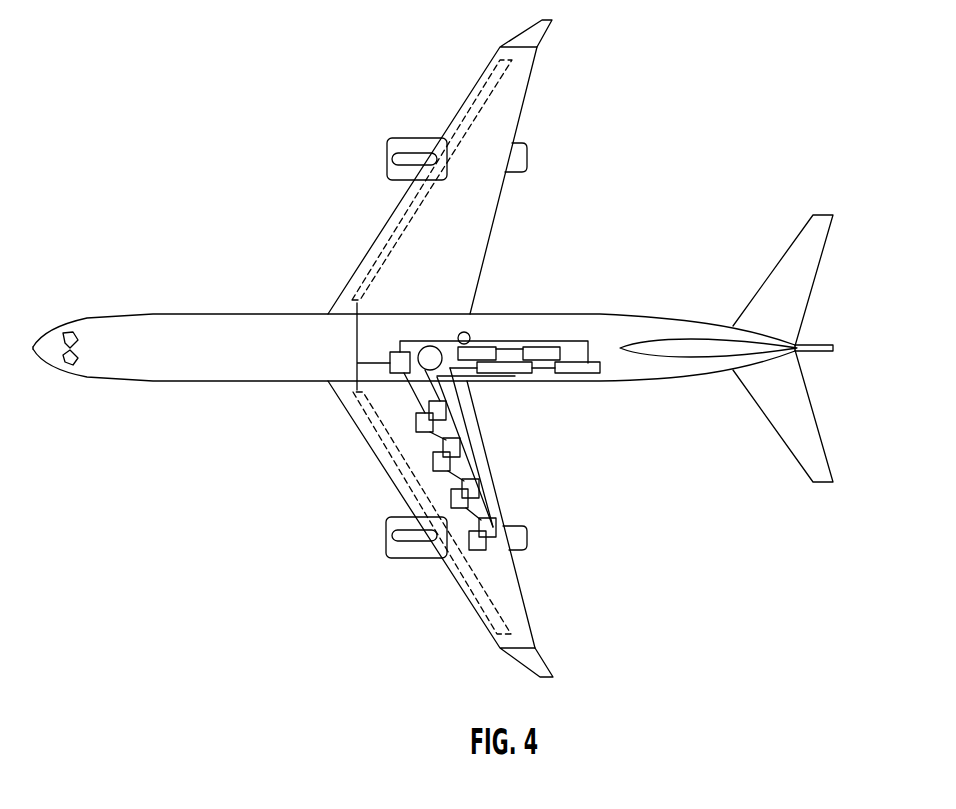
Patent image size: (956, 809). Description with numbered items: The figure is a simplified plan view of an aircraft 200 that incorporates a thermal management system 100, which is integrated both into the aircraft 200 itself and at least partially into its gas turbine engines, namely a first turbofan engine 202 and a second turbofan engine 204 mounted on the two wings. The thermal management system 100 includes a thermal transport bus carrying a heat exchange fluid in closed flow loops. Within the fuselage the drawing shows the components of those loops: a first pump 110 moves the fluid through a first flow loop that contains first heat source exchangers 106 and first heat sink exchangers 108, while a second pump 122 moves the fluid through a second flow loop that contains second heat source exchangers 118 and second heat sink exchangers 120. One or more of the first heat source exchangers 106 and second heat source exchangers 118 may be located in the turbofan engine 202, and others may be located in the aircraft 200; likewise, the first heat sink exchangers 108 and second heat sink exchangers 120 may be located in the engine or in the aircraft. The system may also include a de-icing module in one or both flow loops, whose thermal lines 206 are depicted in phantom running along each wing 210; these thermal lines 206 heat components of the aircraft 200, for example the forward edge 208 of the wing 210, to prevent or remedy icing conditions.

The thermal management system 100 is at (522, 315).
The first heat source exchanger 106 is at (434, 467).
The first heat sink exchanger 108 is at (515, 376).
The first pump 110 is at (429, 346).
The second heat source exchanger 118 is at (482, 490).
The second heat sink exchanger 120 is at (497, 350).
The second pump 122 is at (468, 332).
The aircraft 200 is at (173, 192).
The first turbofan engine 202 is at (414, 551).
The second turbofan engine 204 is at (413, 148).
The thermal lines 206 is at (375, 262).
The forward edge 208 is at (372, 218).
The wing 210 is at (480, 217).